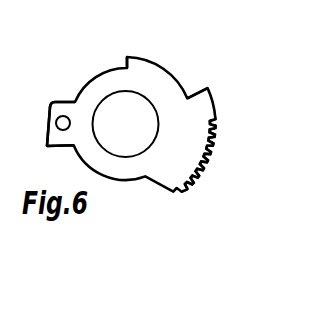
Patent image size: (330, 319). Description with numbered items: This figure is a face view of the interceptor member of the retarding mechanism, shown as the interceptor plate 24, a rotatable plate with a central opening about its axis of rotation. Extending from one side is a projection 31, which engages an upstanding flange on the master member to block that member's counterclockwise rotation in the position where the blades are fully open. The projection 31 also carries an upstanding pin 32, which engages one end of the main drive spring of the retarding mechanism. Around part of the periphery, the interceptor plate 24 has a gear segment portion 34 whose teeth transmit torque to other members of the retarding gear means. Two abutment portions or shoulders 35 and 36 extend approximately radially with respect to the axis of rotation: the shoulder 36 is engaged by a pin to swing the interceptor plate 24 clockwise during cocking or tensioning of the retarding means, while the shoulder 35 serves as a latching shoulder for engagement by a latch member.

The interceptor plate 24 is at (128, 169).
The projection 31 is at (52, 134).
The upstanding pin 32 is at (61, 118).
The gear segment portion 34 is at (210, 147).
The shoulder 35 is at (126, 63).
The shoulder 36 is at (198, 88).